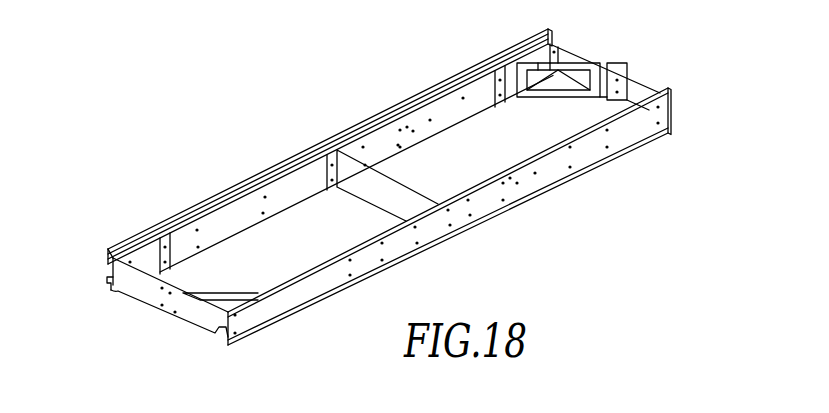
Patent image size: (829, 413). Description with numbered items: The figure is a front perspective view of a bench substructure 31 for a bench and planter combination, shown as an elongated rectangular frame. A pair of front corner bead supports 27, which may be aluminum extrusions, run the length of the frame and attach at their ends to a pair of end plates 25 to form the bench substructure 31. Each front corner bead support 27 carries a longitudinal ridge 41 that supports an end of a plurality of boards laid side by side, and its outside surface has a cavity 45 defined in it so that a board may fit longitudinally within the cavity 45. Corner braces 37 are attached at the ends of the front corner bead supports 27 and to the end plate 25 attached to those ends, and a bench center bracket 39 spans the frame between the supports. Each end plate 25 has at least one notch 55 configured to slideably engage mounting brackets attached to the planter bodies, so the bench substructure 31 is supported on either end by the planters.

The end plate 25 is at (170, 315).
The front corner bead support 27 is at (232, 215).
The bench substructure 31 is at (283, 70).
The corner brace 37 is at (172, 255).
The bench center bracket 39 is at (382, 193).
The longitudinal ridge 41 is at (285, 173).
The cavity 45 is at (633, 130).
The notch 55 is at (112, 281).